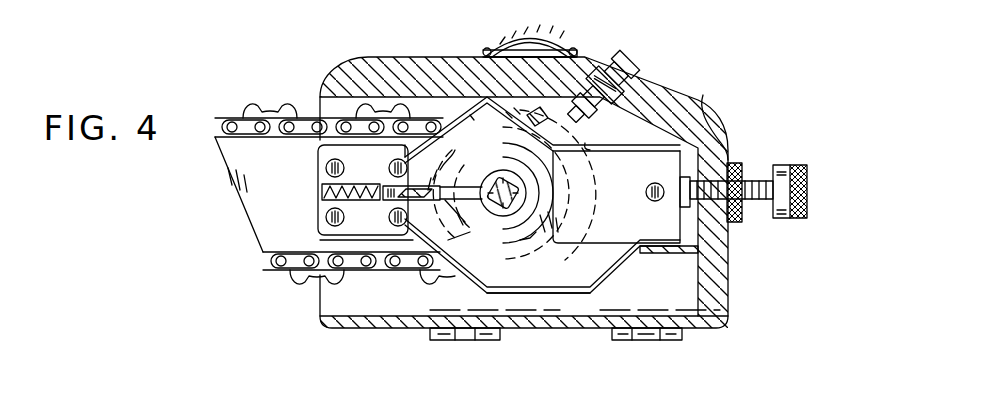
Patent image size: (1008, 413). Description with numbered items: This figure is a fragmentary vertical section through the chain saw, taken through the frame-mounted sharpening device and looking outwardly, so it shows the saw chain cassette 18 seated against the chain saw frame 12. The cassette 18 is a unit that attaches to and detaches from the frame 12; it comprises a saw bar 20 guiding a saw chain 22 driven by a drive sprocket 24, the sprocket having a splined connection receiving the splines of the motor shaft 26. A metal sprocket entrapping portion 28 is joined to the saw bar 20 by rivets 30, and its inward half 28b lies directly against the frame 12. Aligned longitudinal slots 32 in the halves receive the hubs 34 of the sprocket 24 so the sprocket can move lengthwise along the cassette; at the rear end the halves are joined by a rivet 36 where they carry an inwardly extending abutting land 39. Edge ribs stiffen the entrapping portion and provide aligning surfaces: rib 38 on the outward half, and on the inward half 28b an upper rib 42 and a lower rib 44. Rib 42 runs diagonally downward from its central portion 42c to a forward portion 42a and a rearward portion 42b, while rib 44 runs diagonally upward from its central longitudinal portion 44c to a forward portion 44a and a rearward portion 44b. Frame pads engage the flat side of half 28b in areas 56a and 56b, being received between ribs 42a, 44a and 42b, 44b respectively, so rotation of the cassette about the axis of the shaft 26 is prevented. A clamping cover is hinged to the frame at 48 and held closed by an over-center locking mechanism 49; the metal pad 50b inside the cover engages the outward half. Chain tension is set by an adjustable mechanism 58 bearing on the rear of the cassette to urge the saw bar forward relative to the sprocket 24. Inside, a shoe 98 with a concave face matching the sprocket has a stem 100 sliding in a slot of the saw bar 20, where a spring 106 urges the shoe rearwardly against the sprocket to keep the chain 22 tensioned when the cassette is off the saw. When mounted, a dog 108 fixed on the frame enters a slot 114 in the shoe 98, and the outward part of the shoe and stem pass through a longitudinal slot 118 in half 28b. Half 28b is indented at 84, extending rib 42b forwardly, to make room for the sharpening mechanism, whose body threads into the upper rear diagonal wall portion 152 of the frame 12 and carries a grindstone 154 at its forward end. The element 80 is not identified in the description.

The chain saw housing or frame 12 is at (414, 54).
The saw chain cassette 18 is at (218, 258).
The saw bar 20 is at (234, 166).
The saw chain 22 is at (226, 118).
The drive sprocket 24 is at (540, 222).
The motor shaft 26 is at (503, 222).
The sprocket entrapping portion 28 is at (476, 258).
The inward half of entrapping portion 28b is at (470, 115).
The rivets 30 is at (395, 158).
The longitudinal slots 32 is at (240, 2).
The hubs 34 is at (568, 128).
The rivet 36 is at (620, 42).
The upper edge rib 38 is at (290, 12).
The land 39 is at (160, 11).
The upper edge rib 42 is at (489, 92).
The forward rib portion 42a is at (343, 148).
The rearward rib portion 42b is at (718, 135).
The central rib portion 42c is at (508, 114).
The lower edge rib 44 is at (501, 297).
The forward rib portion 44a is at (323, 243).
The rearward rib portion 44b is at (665, 252).
The central longitudinal rib portion 44c is at (585, 292).
The hinged attachment 48 is at (497, 332).
The over-center latching mechanism 49 is at (548, 36).
The metal pad 50b is at (133, 3).
The engagement area 56a is at (358, 177).
The engagement area 56b is at (638, 174).
The adjustable mechanism 58 is at (777, 148).
The threaded collar 80 is at (728, 237).
The cutout 84 is at (588, 143).
The shoe 98 is at (490, 218).
The stem 100 is at (413, 203).
The spring 106 is at (328, 192).
The dog 108 is at (417, 203).
The slot 114 is at (450, 159).
The longitudinal slot 118 is at (462, 180).
The upper rear diagonal wall portion 152 is at (655, 100).
The grindstone 154 is at (584, 112).